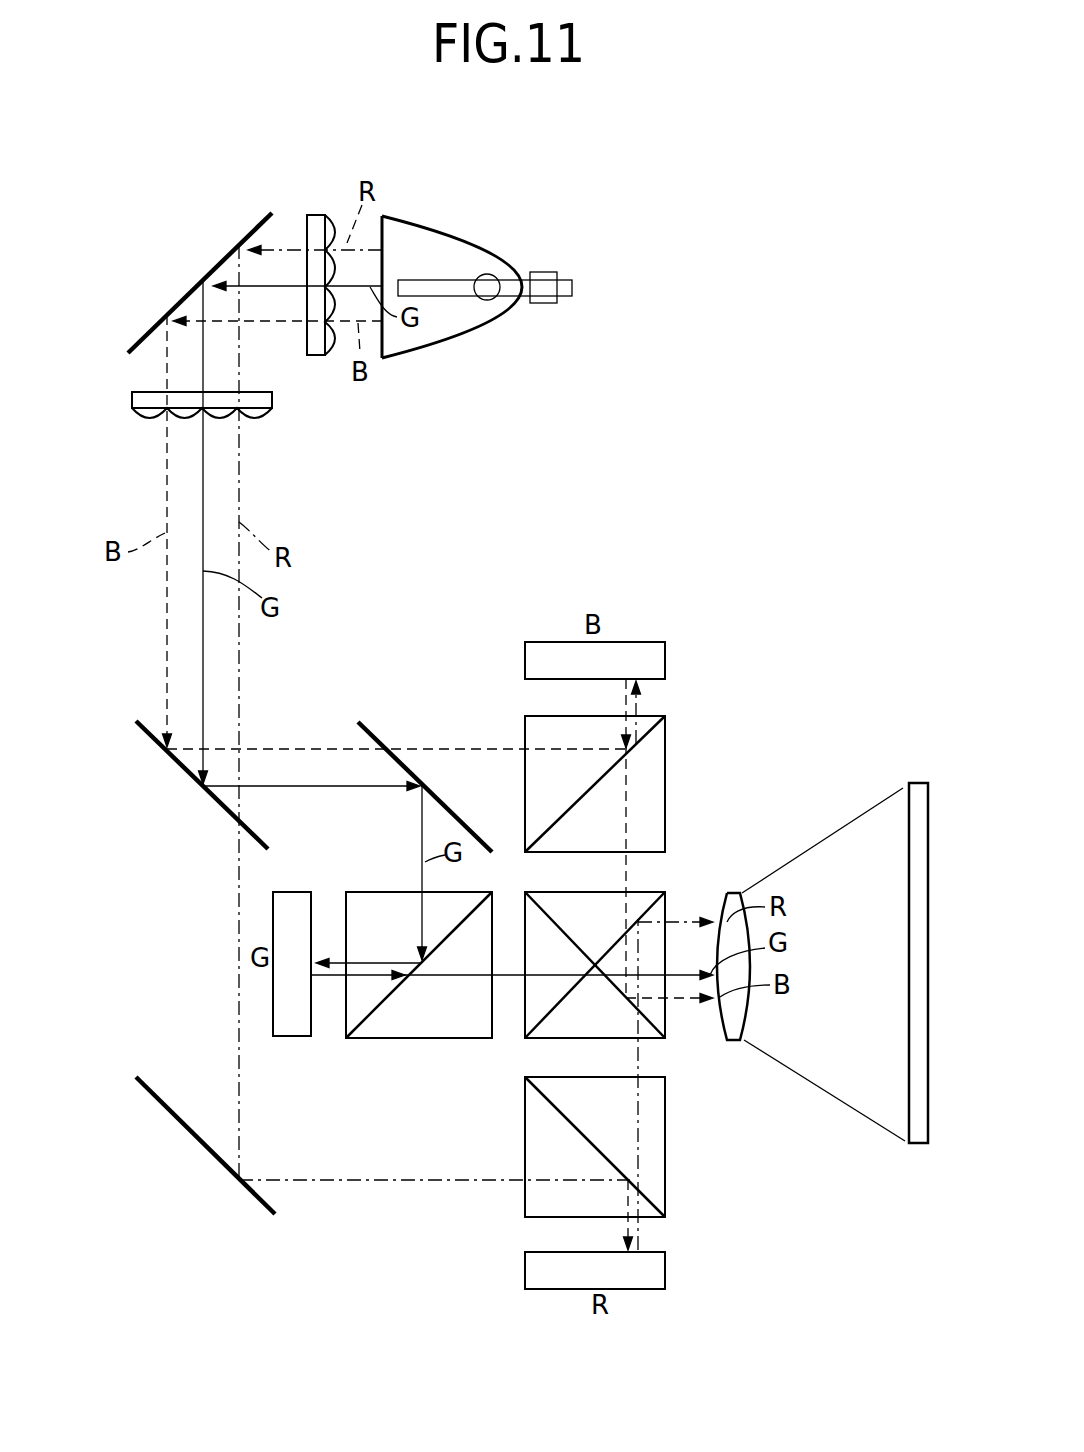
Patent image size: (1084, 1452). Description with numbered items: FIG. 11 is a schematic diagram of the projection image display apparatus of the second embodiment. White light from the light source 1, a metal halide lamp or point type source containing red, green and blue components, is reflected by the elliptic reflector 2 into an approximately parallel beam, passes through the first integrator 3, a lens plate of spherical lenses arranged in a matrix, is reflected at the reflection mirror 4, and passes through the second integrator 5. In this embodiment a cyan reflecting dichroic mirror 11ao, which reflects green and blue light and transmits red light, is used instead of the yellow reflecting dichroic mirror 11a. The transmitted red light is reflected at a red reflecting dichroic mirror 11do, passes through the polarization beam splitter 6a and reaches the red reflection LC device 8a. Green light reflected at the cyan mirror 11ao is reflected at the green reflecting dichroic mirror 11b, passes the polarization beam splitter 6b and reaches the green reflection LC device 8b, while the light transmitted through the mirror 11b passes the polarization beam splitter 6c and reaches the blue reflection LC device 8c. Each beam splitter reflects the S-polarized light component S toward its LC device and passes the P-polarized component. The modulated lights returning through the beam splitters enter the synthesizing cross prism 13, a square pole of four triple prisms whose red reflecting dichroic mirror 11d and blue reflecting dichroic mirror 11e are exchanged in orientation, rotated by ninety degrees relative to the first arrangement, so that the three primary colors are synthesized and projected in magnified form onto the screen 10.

The light source 1 is at (545, 272).
The reflector 2 is at (478, 233).
The first integrator 3 is at (323, 215).
The reflection mirror 4 is at (270, 212).
The second integrator 5 is at (272, 400).
The polarization beam splitter 6a is at (667, 1133).
The polarization beam splitter 6b is at (375, 1040).
The polarization beam splitter 6c is at (665, 817).
The red reflection LC device 8a is at (667, 1272).
The green reflection LC device 8b is at (290, 1040).
The blue reflection LC device 8c is at (665, 655).
The screen 10 is at (918, 1145).
The yellow reflecting dichroic mirror 11a is at (272, 848).
The cyan reflecting dichroic mirror 11ao is at (215, 785).
The green reflecting dichroic mirror 11b is at (367, 723).
The red reflecting dichroic mirror 11d is at (638, 920).
The red reflecting dichroic mirror 11do is at (275, 1216).
The blue reflecting dichroic mirror 11e is at (613, 985).
The synthesizing cross prism 13 is at (590, 969).
The S-polarized light component S is at (640, 708).